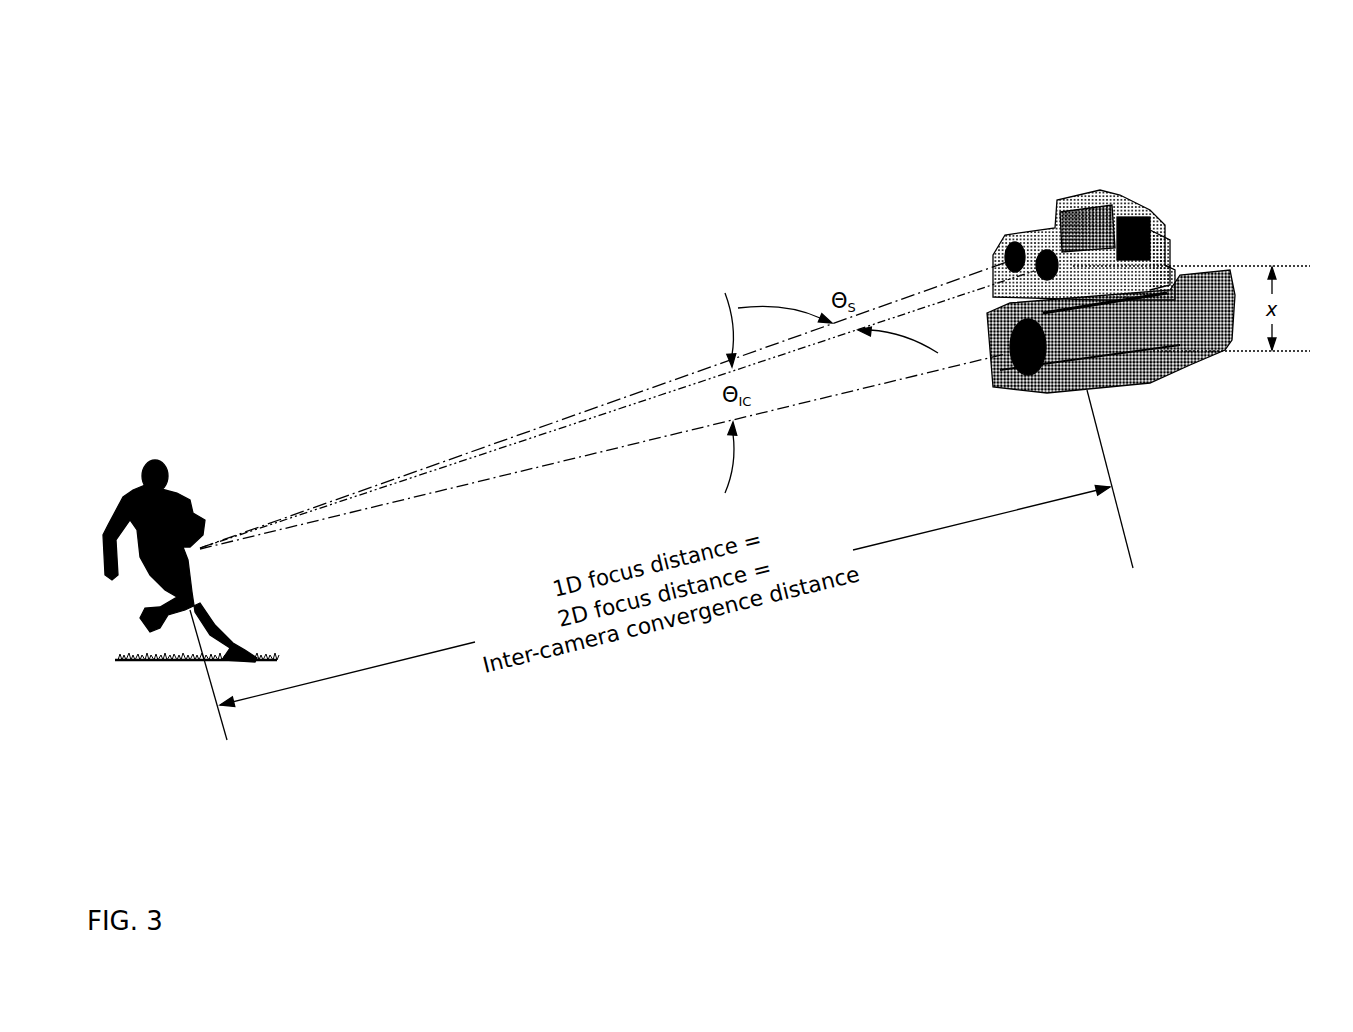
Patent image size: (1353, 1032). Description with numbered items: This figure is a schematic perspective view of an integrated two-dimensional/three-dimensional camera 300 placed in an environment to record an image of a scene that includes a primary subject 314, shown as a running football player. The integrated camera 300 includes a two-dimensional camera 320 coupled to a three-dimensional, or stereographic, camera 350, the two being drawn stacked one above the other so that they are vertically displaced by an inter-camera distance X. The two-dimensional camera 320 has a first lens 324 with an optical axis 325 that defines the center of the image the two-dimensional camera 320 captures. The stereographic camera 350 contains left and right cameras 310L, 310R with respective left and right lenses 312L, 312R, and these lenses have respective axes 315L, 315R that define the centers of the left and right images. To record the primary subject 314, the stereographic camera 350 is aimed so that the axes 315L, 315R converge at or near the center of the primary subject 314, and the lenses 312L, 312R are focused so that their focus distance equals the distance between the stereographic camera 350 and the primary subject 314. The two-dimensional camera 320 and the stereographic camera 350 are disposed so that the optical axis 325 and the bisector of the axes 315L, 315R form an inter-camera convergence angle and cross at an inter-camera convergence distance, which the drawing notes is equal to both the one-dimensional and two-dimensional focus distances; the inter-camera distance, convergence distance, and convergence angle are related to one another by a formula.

The integrated 2D/3D camera 300 is at (1232, 114).
The primary subject 314 is at (172, 473).
The right axis 315R is at (645, 388).
The left axis 315L is at (605, 412).
The optical axis 325 is at (653, 438).
The 3D camera 350 is at (1140, 172).
The right camera 310R is at (1110, 200).
The left camera 310L is at (1147, 227).
The right lens 312R is at (1018, 247).
The left lens 312L is at (1038, 250).
The 2D camera 320 is at (1232, 353).
The first lens 324 is at (1032, 377).